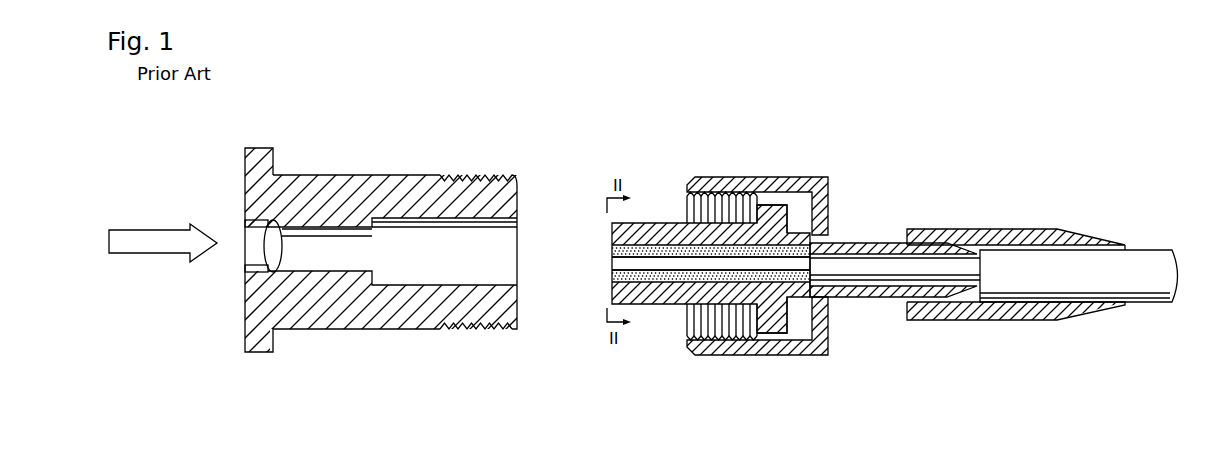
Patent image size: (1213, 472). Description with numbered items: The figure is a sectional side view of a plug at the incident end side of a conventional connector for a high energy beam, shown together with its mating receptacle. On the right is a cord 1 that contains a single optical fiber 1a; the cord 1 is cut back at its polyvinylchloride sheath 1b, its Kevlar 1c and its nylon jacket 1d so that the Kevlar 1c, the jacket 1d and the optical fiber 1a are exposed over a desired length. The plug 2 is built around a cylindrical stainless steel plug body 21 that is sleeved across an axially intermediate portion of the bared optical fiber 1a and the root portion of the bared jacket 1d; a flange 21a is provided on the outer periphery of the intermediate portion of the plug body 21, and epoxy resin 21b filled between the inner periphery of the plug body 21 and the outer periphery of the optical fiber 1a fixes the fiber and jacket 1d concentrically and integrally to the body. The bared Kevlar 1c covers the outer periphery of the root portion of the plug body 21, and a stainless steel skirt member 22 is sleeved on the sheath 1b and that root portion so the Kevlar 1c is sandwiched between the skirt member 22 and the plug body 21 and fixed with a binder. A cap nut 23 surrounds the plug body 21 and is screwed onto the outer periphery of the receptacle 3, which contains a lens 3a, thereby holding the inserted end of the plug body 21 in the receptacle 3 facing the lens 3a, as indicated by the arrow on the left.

The cord 1 is at (1149, 241).
The optical fiber 1a is at (670, 262).
The sheath 1b is at (1170, 260).
The Kevlar 1c is at (960, 253).
The jacket 1d is at (892, 278).
The plug 2 is at (817, 266).
The plug body 21 is at (673, 295).
The flange 21a is at (775, 323).
The epoxy resin 21b is at (645, 278).
The skirt member 22 is at (1020, 233).
The cap nut 23 is at (790, 183).
The receptacle 3 is at (388, 170).
The lens 3a is at (244, 268).